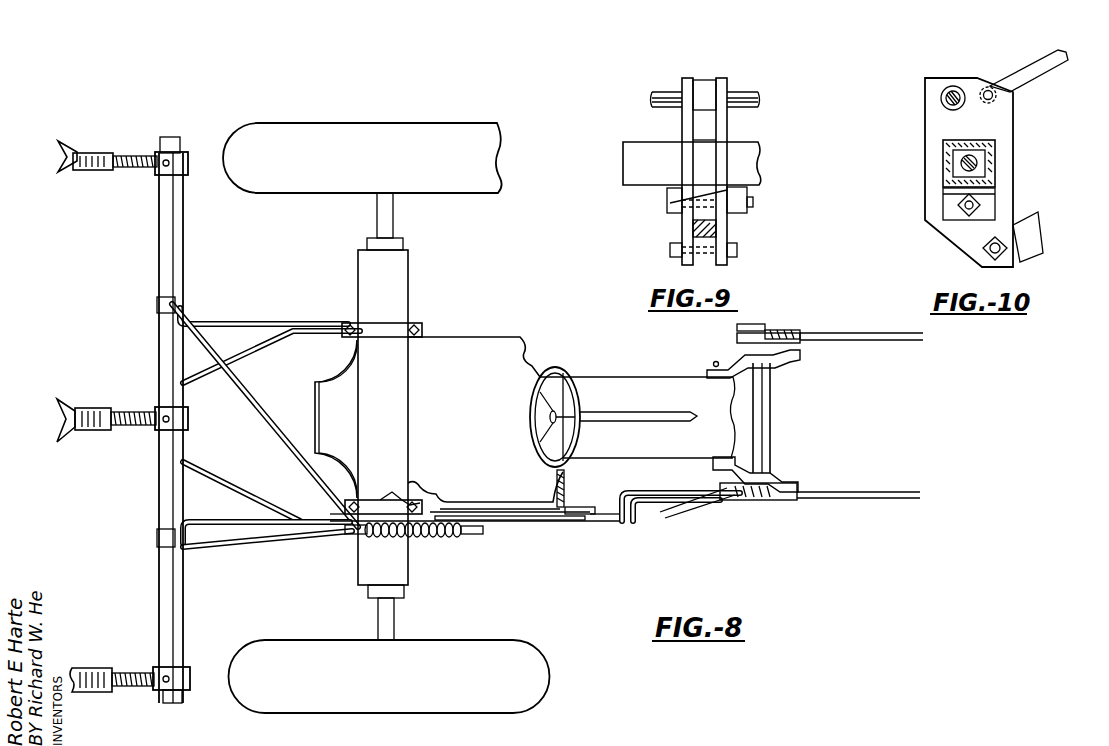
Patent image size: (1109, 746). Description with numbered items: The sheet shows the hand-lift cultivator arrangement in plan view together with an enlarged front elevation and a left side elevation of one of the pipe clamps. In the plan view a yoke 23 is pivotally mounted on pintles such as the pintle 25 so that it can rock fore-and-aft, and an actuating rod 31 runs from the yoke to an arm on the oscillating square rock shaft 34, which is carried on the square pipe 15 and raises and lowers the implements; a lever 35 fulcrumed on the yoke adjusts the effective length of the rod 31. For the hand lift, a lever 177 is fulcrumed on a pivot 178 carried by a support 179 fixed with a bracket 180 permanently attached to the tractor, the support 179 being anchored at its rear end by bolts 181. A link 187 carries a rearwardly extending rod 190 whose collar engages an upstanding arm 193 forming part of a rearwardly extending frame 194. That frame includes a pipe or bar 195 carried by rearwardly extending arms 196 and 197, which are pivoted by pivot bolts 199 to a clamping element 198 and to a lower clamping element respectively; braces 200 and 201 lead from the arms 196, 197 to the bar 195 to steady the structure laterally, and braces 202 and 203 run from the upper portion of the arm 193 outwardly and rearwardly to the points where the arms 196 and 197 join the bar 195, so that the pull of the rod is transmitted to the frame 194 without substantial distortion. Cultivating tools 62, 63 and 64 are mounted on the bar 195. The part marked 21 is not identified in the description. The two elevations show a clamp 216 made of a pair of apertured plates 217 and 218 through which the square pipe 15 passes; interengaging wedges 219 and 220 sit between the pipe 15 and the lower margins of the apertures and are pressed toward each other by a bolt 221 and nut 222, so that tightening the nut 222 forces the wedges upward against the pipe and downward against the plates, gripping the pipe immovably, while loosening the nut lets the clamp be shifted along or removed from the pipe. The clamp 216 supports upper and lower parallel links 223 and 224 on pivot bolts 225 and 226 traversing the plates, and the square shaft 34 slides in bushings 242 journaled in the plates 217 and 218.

In FIG. 9, the square pipe 15 is at (692, 163).
In FIG. 10, the square pipe 15 is at (943, 165).
In FIG. 8, the vehicle body / cylinder 21 is at (479, 418).
In FIG. 8, the yoke member 23 is at (730, 478).
In FIG. 8, the pintle 25 is at (716, 362).
In FIG. 8, the actuating rod 31 is at (855, 333).
In FIG. 9, the square shaft 34 is at (655, 95).
In FIG. 8, the lever 35 is at (730, 340).
In FIG. 8, the cultivating shovel 62 is at (117, 692).
In FIG. 8, the cultivating shovel 63 is at (97, 431).
In FIG. 8, the cultivating shovel 64 is at (103, 172).
In FIG. 8, the lever 177 is at (585, 522).
In FIG. 8, the pivot 178 is at (508, 510).
In FIG. 8, the support 179 is at (476, 512).
In FIG. 8, the bracket 180 is at (567, 495).
In FIG. 8, the bolts 181 is at (392, 502).
In FIG. 8, the link 187 is at (605, 523).
In FIG. 8, the rod 190 is at (348, 533).
In FIG. 8, the upstanding arm 193 is at (370, 536).
In FIG. 8, the rearwardly extending frame 194 is at (150, 345).
In FIG. 8, the pipe or bar 195 is at (184, 242).
In FIG. 8, the rearwardly extending arm 196 is at (257, 320).
In FIG. 8, the rearwardly extending arm 197 is at (240, 505).
In FIG. 8, the clamping element 198 is at (393, 322).
In FIG. 8, the pivot bolts 199 is at (345, 322).
In FIG. 8, the brace 200 is at (272, 338).
In FIG. 8, the brace 201 is at (225, 478).
In FIG. 8, the brace 202 is at (264, 410).
In FIG. 8, the brace 203 is at (225, 538).
In FIG. 9, the clamp 216 is at (692, 70).
In FIG. 9, the apertured plate 217 is at (682, 124).
In FIG. 9, the apertured plate 218 is at (727, 124).
In FIG. 9, the wedge 219 is at (668, 188).
In FIG. 10, the wedge 219 is at (958, 200).
In FIG. 9, the wedge 220 is at (728, 215).
In FIG. 10, the wedge 220 is at (960, 209).
In FIG. 9, the bolt 221 is at (670, 204).
In FIG. 10, the bolt 221 is at (968, 216).
In FIG. 9, the nut 222 is at (748, 207).
In FIG. 10, the upper parallel link 223 is at (1043, 50).
In FIG. 10, the lower parallel link 224 is at (1042, 231).
In FIG. 10, the pivot bolt 225 is at (990, 88).
In FIG. 10, the pivot bolt 226 is at (1012, 258).
In FIG. 9, the bushings 242 is at (708, 80).
In FIG. 10, the bushings 242 is at (952, 83).